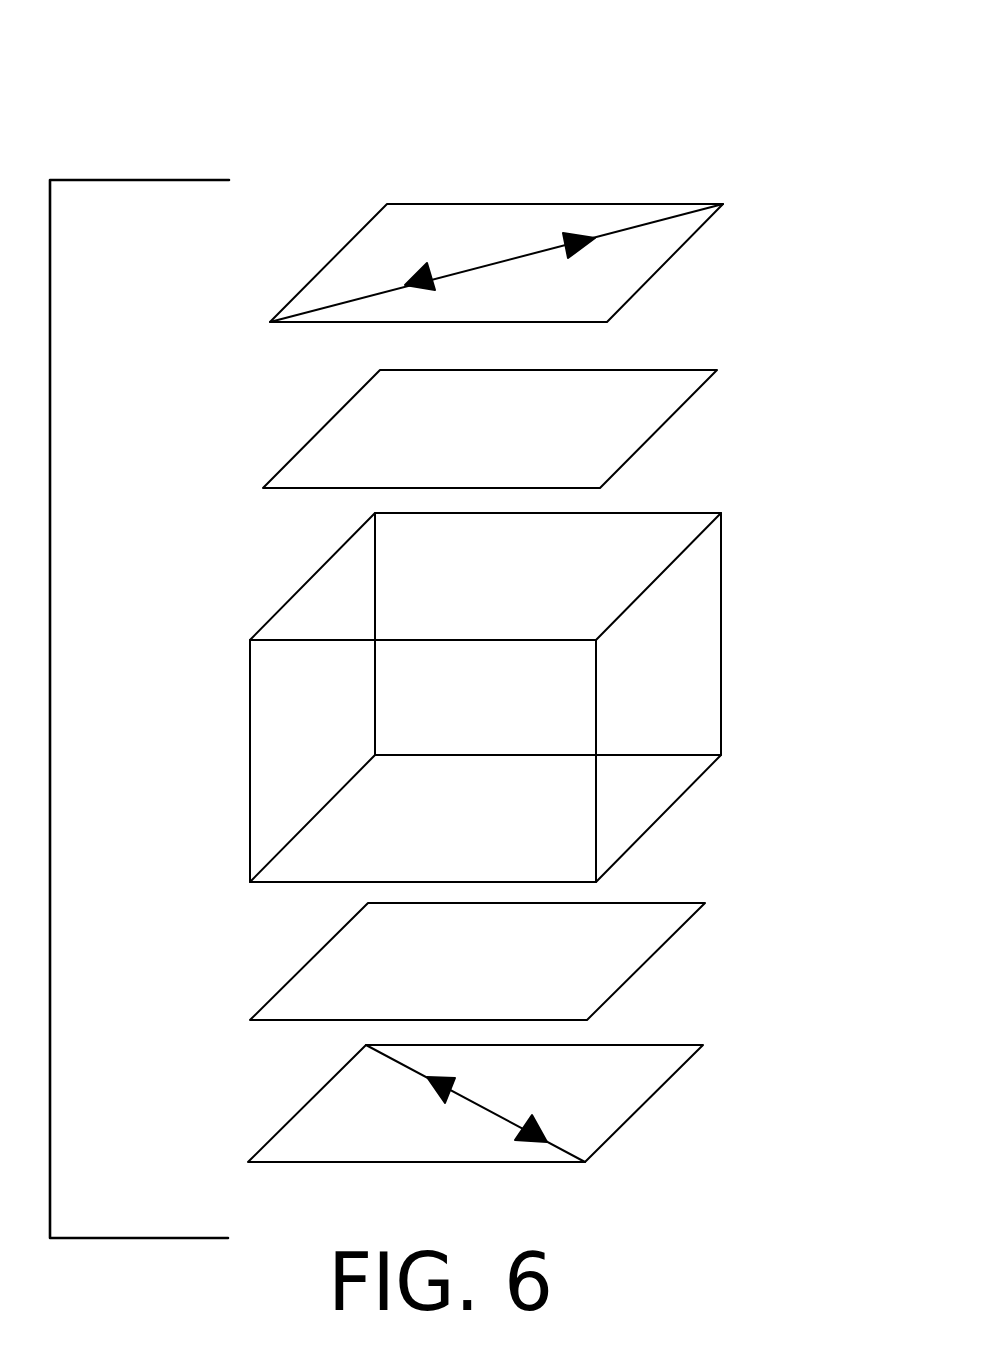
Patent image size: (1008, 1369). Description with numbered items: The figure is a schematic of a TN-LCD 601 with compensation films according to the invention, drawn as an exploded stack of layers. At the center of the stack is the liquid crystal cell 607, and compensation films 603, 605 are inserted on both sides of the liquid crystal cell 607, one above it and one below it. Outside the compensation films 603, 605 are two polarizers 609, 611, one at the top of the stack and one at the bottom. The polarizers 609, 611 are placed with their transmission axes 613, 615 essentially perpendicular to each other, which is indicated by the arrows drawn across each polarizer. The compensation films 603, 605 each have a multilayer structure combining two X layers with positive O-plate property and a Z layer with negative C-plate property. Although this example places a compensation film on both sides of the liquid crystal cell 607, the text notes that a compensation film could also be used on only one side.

The TN-LCD 601 is at (499, 131).
The compensation film 603 is at (657, 395).
The compensation film 605 is at (657, 923).
The liquid crystal cell 607 is at (248, 747).
The polarizer 609 is at (695, 1037).
The polarizer 611 is at (645, 204).
The transmission axis 613 is at (490, 1107).
The transmission axis 615 is at (470, 263).